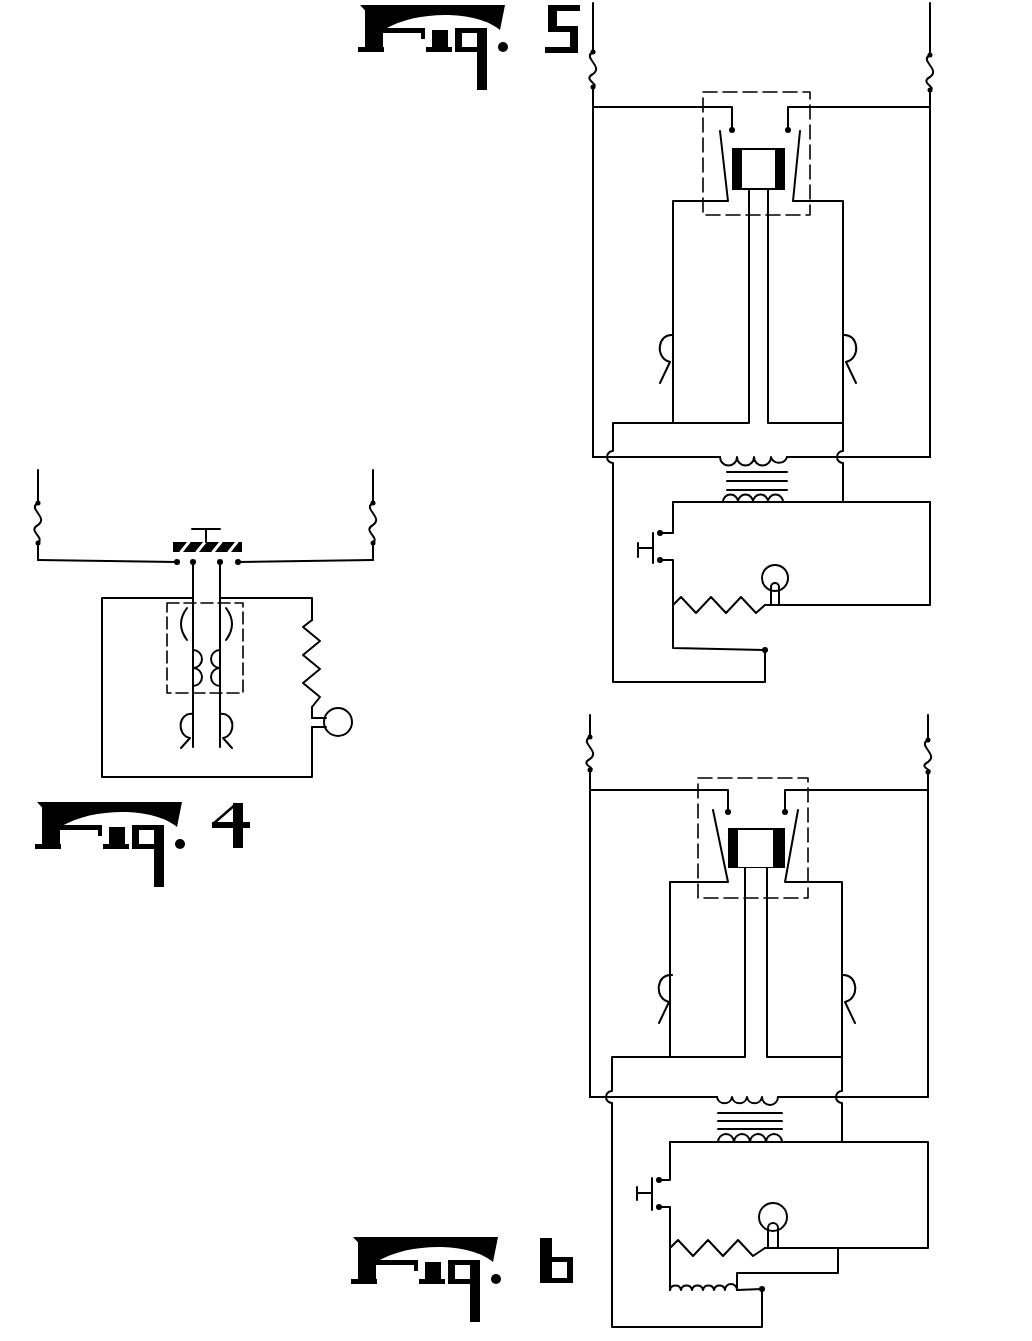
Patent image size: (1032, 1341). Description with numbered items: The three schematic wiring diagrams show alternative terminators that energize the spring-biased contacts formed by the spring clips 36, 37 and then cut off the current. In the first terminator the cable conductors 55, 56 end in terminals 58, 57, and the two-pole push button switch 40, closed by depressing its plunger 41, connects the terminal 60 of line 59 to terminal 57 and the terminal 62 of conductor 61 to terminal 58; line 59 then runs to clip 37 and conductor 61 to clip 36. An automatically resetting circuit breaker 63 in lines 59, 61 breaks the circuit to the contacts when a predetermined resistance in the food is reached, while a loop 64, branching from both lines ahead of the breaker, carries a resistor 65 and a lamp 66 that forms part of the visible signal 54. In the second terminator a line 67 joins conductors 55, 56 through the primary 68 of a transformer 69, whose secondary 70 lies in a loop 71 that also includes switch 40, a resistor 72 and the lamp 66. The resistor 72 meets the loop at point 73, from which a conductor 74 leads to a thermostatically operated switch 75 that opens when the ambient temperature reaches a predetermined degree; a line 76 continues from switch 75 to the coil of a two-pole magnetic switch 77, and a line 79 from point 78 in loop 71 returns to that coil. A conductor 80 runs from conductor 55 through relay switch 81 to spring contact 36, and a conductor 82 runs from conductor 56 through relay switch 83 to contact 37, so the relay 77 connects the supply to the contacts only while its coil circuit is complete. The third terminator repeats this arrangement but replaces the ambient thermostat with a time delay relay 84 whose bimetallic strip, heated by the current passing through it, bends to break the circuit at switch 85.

In FIG. 5, the spring clip 36 is at (660, 358).
In FIG. 4, the spring clip 36 is at (178, 733).
In FIG. 5, the spring clip 37 is at (846, 358).
In FIG. 4, the spring clip 37 is at (233, 733).
In FIG. 5, the switch 40 is at (646, 529).
In FIG. 4, the switch 40 is at (167, 540).
In FIG. 4, the plunger 41 is at (210, 528).
In FIG. 5, the visible signal 54 is at (807, 558).
In FIG. 4, the visible signal 54 is at (367, 702).
In FIG. 5, the conductor 55 is at (593, 30).
In FIG. 4, the conductor 55 is at (38, 490).
In FIG. 5, the conductor 56 is at (930, 30).
In FIG. 4, the conductor 56 is at (373, 490).
In FIG. 4, the terminal 57 is at (240, 560).
In FIG. 4, the terminal 58 is at (176, 566).
In FIG. 4, the line 59 is at (222, 577).
In FIG. 4, the terminal 60 is at (226, 562).
In FIG. 4, the conductor 61 is at (192, 577).
In FIG. 4, the terminal 62 is at (176, 561).
In FIG. 4, the circuit breaker 63 is at (253, 660).
In FIG. 4, the loop 64 is at (100, 733).
In FIG. 4, the resistor 65 is at (315, 656).
In FIG. 5, the lamp 66 is at (786, 585).
In FIG. 4, the lamp 66 is at (335, 738).
In FIG. 5, the line 67 is at (850, 455).
In FIG. 5, the primary 68 is at (748, 456).
In FIG. 5, the transformer 69 is at (710, 484).
In FIG. 5, the secondary 70 is at (752, 502).
In FIG. 5, the loop 71 is at (930, 562).
In FIG. 5, the resistor 72 is at (717, 603).
In FIG. 5, the connection point 73 is at (676, 603).
In FIG. 5, the conductor 74 is at (697, 648).
In FIG. 5, the thermostatically operated switch 75 is at (768, 653).
In FIG. 5, the line 76 is at (748, 358).
In FIG. 5, the magnetic switch 77 is at (754, 297).
In FIG. 5, the point 78 is at (842, 505).
In FIG. 5, the line 79 is at (768, 358).
In FIG. 5, the conductor 80 is at (607, 112).
In FIG. 5, the switch 81 is at (732, 130).
In FIG. 5, the conductor 82 is at (905, 113).
In FIG. 5, the switch 83 is at (788, 130).
In FIG. 6, the time delay relay 84 is at (748, 1291).
In FIG. 6, the switch 85 is at (766, 1289).